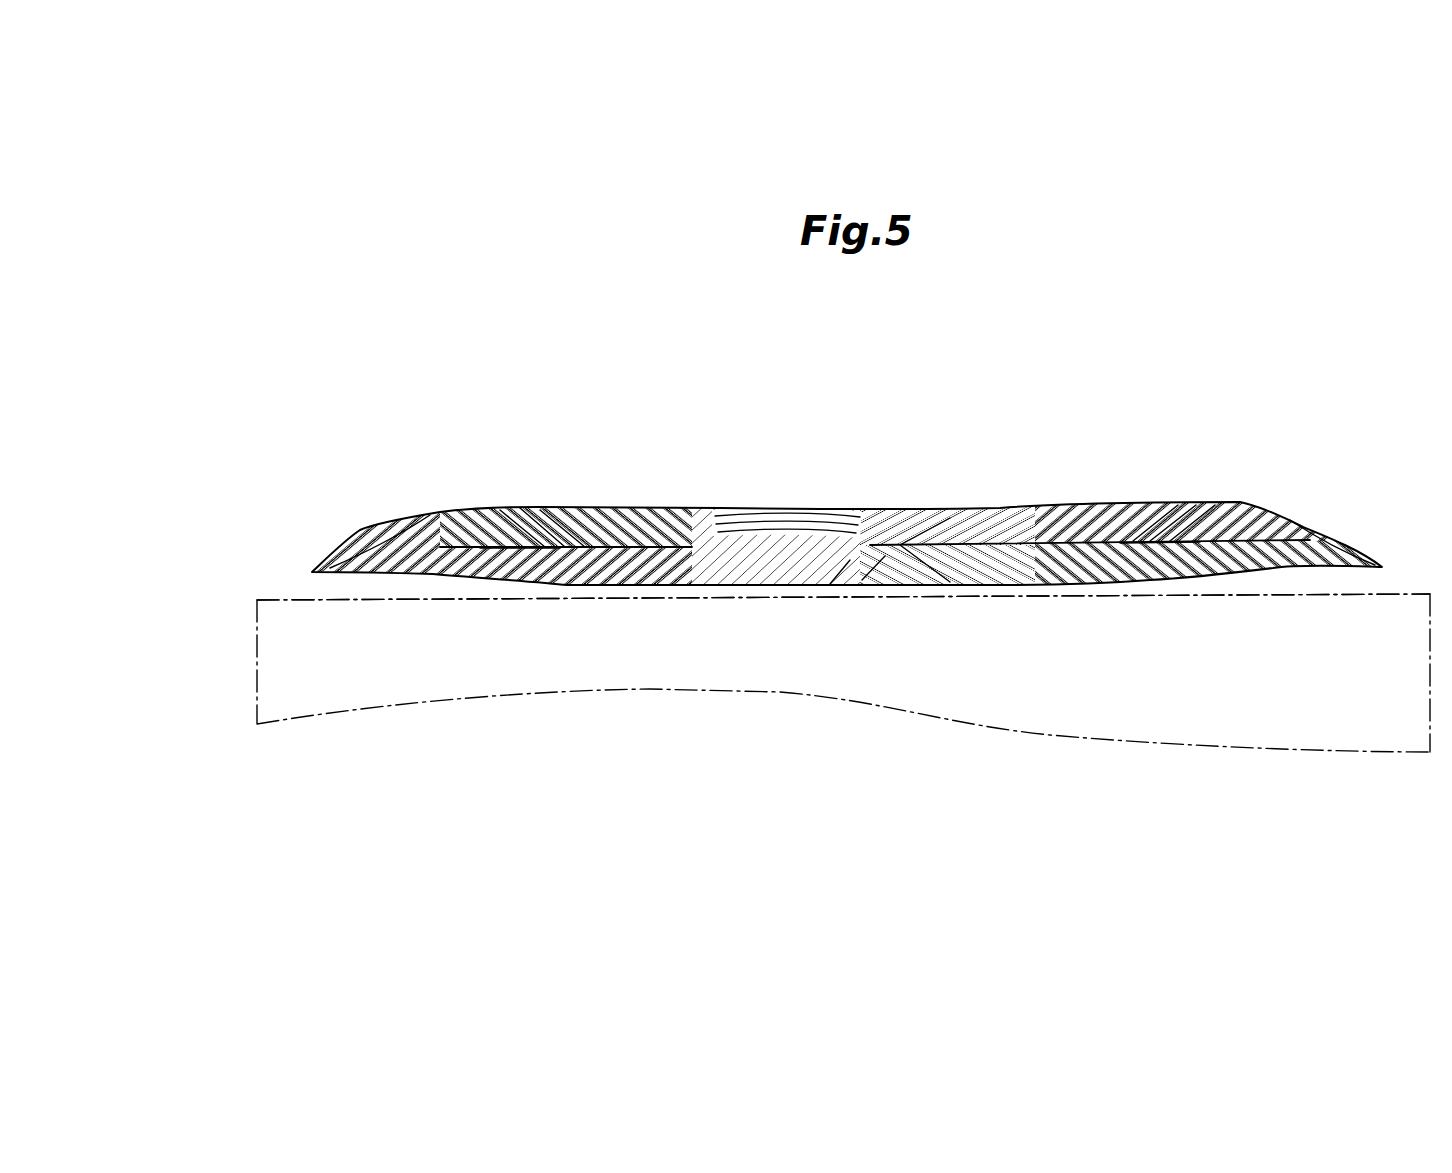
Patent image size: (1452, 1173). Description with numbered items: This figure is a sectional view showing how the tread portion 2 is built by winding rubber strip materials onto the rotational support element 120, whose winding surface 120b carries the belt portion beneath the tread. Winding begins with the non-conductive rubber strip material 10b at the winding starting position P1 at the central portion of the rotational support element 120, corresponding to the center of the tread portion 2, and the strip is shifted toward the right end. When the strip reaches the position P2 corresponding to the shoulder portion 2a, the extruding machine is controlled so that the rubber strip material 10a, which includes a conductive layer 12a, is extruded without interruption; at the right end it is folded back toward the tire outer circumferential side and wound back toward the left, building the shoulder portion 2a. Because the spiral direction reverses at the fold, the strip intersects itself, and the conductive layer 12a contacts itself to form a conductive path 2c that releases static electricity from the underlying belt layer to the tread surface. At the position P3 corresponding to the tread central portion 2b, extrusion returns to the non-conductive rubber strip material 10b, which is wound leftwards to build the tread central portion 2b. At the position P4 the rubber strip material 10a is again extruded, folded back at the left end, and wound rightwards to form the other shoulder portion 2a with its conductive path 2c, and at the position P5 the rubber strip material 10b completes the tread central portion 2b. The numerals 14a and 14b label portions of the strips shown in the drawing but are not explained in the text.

The tread portion 2 is at (818, 408).
The shoulder portion 2a is at (442, 515).
The tread central portion 2b is at (930, 530).
The conductive path 2c is at (517, 560).
The rubber strip material 10a is at (525, 496).
The rubber strip material 10b is at (853, 597).
The conductive layer 12a is at (513, 512).
The third fiber strand 14a is at (543, 522).
The third fiber strand lower 14b is at (865, 578).
The winding starting position P1 is at (820, 577).
The position corresponding to the shoulder portion P2 is at (1073, 560).
The position corresponding to the tread central portion P3 is at (1045, 530).
The position corresponding to the shoulder portion P4 is at (665, 540).
The position corresponding to the tread central portion P5 is at (664, 532).
The rotational support element 120 is at (392, 641).
The winding surface 120b is at (287, 596).